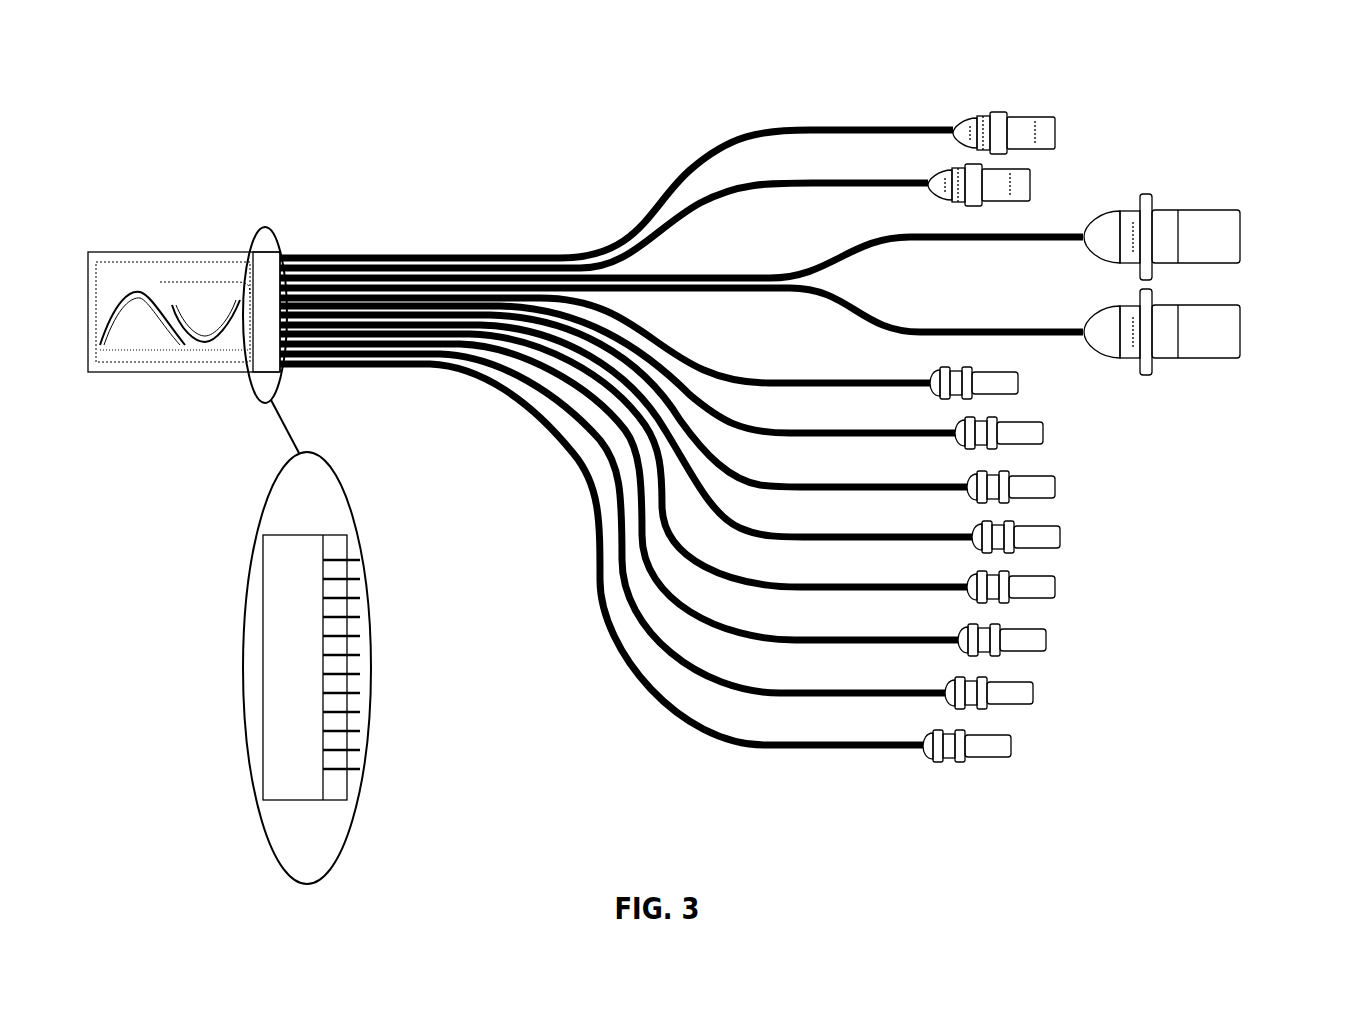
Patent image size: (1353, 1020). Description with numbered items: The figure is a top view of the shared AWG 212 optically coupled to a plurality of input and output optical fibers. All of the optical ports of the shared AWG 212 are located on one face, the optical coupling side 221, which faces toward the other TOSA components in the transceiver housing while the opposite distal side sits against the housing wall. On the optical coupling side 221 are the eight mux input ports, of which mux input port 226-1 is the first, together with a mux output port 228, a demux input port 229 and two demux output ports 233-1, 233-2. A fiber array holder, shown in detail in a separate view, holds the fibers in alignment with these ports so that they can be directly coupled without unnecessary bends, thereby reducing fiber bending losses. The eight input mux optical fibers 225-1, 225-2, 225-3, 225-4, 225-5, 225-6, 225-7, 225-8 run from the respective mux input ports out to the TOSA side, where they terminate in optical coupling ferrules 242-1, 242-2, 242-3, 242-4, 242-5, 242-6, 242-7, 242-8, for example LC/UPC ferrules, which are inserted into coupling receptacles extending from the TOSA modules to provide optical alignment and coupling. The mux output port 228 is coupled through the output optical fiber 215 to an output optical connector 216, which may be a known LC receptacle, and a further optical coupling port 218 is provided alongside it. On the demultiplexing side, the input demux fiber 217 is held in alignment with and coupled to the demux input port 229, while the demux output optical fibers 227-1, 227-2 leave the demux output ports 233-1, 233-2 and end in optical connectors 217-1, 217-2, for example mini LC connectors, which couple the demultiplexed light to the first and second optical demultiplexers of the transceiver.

The shared AWG 212 is at (203, 250).
The output optical fiber 215 is at (858, 310).
The output optical connector 216 is at (1236, 268).
The input demux fiber 217 is at (985, 242).
The optical connector 217-1 is at (1050, 122).
The optical connector 217-2 is at (1034, 175).
The optical coupling port 218 is at (1243, 360).
The optical coupling side 221 is at (335, 533).
The input mux optical fiber 225-1 is at (908, 387).
The input mux optical fiber 225-2 is at (893, 437).
The input mux optical fiber 225-3 is at (881, 491).
The input mux optical fiber 225-4 is at (866, 541).
The input mux optical fiber 225-5 is at (836, 591).
The input mux optical fiber 225-6 is at (797, 644).
The input mux optical fiber 225-7 is at (737, 697).
The input mux optical fiber 225-8 is at (650, 700).
The mux input port 226-1 is at (376, 629).
The demux output optical fiber 227-1 is at (807, 127).
The demux output optical fiber 227-2 is at (817, 190).
The mux output port 228 is at (360, 617).
The demux input port 229 is at (360, 598).
The demux output port 233-1 is at (360, 560).
The demux output port 233-2 is at (360, 579).
The optical coupling ferrule 242-1 is at (1022, 390).
The optical coupling ferrule 242-2 is at (1045, 446).
The optical coupling ferrule 242-3 is at (1053, 500).
The optical coupling ferrule 242-4 is at (1058, 550).
The optical coupling ferrule 242-5 is at (1048, 600).
The optical coupling ferrule 242-6 is at (1038, 652).
The optical coupling ferrule 242-7 is at (1030, 706).
The optical coupling ferrule 242-8 is at (1010, 758).